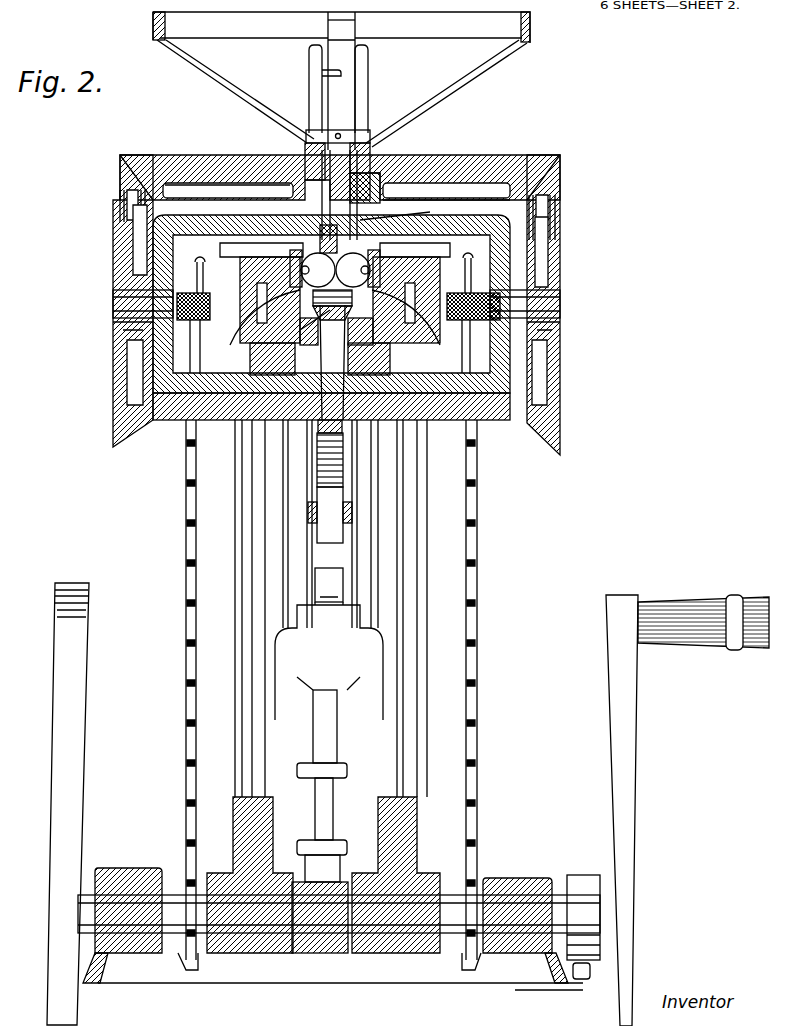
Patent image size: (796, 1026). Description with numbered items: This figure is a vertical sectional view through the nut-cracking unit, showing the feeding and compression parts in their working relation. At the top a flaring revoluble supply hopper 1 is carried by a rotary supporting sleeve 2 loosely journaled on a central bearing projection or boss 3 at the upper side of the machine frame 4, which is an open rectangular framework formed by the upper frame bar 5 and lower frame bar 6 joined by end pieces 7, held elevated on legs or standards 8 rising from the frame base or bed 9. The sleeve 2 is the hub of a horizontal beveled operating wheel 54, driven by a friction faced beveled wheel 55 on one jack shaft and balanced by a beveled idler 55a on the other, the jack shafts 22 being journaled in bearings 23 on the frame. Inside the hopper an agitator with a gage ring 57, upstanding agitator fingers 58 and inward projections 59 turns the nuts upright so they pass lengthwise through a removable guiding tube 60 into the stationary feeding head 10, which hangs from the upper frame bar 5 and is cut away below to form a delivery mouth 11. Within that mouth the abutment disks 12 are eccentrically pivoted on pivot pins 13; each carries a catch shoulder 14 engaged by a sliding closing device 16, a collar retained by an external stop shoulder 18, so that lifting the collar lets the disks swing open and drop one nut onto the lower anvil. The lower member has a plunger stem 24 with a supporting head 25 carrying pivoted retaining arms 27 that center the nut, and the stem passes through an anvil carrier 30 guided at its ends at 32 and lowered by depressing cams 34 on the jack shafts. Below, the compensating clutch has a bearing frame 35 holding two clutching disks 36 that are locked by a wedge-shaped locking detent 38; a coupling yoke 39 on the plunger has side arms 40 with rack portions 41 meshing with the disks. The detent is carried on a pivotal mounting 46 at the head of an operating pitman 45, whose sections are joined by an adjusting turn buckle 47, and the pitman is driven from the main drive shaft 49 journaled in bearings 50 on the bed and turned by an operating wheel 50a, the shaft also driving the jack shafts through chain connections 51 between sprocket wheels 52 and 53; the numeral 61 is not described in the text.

The supply hopper 1 is at (470, 80).
The rotary supporting sleeve 2 is at (383, 155).
The central bearing projection or boss 3 is at (355, 25).
The machine frame 4 is at (515, 250).
The upper frame bar 5 is at (446, 210).
The lower frame bar 6 is at (457, 408).
The end pieces 7 is at (160, 348).
The legs or standards 8 is at (331, 690).
The frame base or bed 9 is at (540, 975).
The stationary feeding head 10 is at (275, 205).
The delivery mouth 11 is at (406, 211).
The abutment disks 12 is at (340, 300).
The pivot pins 13 is at (372, 270).
The catch shoulder 14 is at (301, 270).
The closing device 16 is at (275, 245).
The external stop shoulder 18 is at (292, 337).
The jack shafts 22 is at (113, 304).
The bearings 23 is at (115, 330).
The plunger stem 24 is at (335, 340).
The supporting head 25 is at (284, 354).
The retaining arms 27 is at (341, 334).
The anvil carrier 30 is at (310, 330).
The slidable guide 32 is at (209, 346).
The depressing cams 34 is at (424, 346).
The bearing frame 35 is at (353, 510).
The clutching disks 36 is at (317, 510).
The locking detent 38 is at (340, 585).
The coupling yoke 39 is at (318, 428).
The side arms 40 is at (300, 612).
The rack portions 41 is at (320, 455).
The operating pitman 45 is at (337, 745).
The pivotal mounting 46 is at (331, 608).
The turn buckle 47 is at (318, 807).
The main drive shaft 49 is at (415, 912).
The bearings 50 is at (148, 855).
The operating wheel 50a is at (634, 797).
The chain connections 51 is at (80, 628).
The sprocket wheel 52 is at (178, 955).
The sprocket wheel 53 is at (200, 262).
The operating wheel 54 is at (490, 175).
The beveled wheel 55 is at (555, 440).
The beveled idler 55a is at (120, 200).
The gage ring 57 is at (370, 135).
The agitator fingers 58 is at (368, 73).
The inward projections 59 is at (309, 60).
The guiding tube 60 is at (383, 180).
The tube top 61 is at (355, 32).